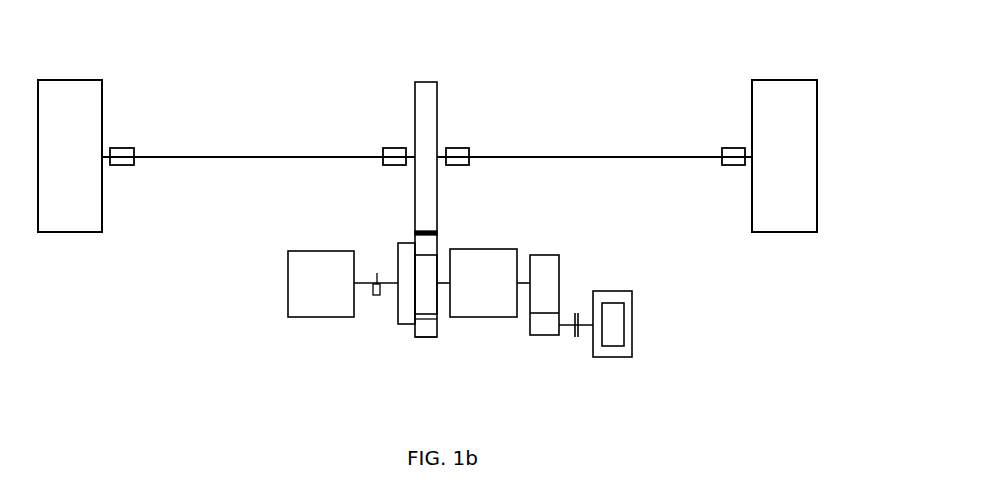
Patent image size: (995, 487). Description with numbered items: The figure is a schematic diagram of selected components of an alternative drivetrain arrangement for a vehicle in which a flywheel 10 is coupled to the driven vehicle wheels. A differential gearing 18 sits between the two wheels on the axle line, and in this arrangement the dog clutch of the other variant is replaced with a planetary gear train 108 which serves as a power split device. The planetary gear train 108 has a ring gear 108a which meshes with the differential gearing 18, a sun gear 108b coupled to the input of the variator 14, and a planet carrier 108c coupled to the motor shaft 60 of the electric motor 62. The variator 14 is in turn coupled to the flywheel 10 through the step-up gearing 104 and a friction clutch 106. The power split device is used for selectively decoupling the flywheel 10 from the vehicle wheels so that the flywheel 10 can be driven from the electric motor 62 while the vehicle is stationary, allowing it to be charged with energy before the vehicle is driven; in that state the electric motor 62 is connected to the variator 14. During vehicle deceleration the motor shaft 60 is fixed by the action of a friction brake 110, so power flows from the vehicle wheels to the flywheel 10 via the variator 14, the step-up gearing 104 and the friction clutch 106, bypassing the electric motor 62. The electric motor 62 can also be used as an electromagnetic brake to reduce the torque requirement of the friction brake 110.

The differential gearing 18 is at (425, 81).
The planetary gear train 108 is at (395, 225).
The ring gear 108a is at (427, 338).
The sun gear 108b is at (438, 305).
The planet carrier 108c is at (398, 324).
The electric motor 62 is at (302, 317).
The motor shaft 60 is at (360, 281).
The friction brake 110 is at (375, 296).
The variator 14 is at (478, 249).
The step-up gearing 104 is at (545, 255).
The friction clutch 106 is at (573, 340).
The flywheel 10 is at (624, 327).